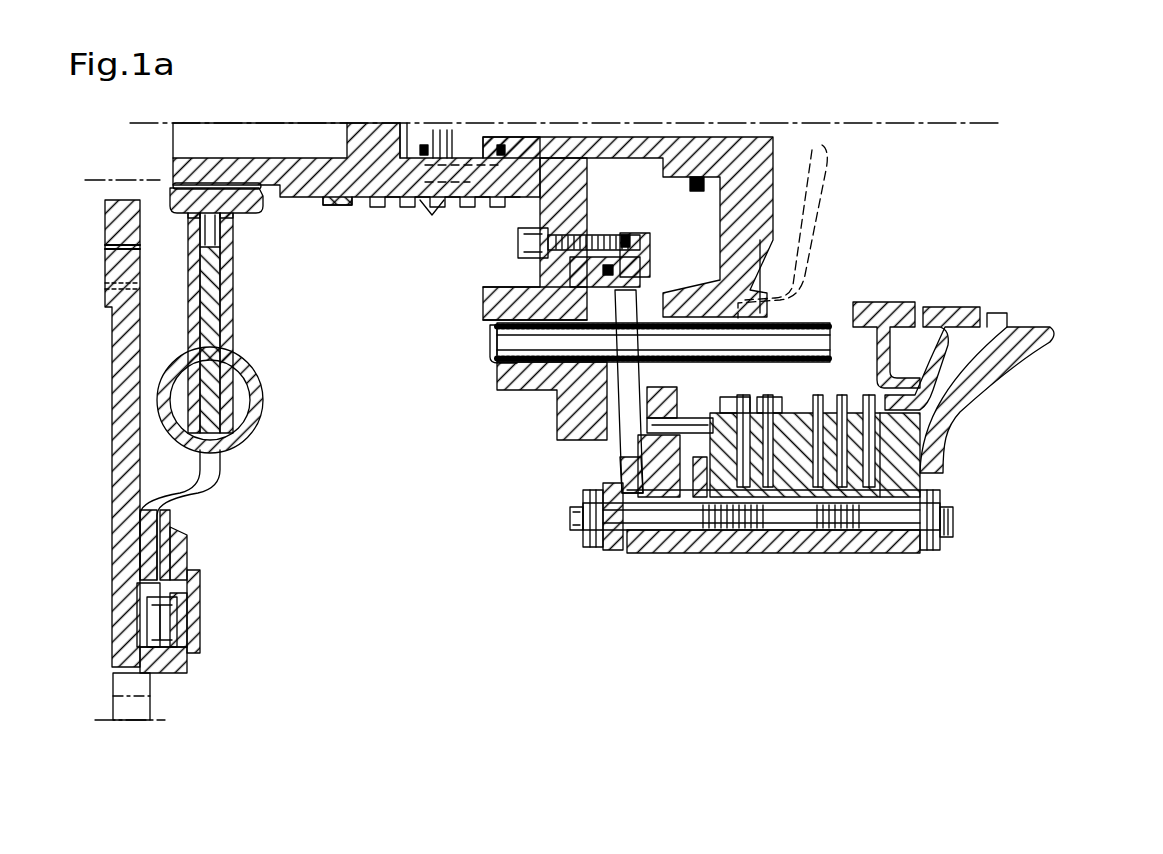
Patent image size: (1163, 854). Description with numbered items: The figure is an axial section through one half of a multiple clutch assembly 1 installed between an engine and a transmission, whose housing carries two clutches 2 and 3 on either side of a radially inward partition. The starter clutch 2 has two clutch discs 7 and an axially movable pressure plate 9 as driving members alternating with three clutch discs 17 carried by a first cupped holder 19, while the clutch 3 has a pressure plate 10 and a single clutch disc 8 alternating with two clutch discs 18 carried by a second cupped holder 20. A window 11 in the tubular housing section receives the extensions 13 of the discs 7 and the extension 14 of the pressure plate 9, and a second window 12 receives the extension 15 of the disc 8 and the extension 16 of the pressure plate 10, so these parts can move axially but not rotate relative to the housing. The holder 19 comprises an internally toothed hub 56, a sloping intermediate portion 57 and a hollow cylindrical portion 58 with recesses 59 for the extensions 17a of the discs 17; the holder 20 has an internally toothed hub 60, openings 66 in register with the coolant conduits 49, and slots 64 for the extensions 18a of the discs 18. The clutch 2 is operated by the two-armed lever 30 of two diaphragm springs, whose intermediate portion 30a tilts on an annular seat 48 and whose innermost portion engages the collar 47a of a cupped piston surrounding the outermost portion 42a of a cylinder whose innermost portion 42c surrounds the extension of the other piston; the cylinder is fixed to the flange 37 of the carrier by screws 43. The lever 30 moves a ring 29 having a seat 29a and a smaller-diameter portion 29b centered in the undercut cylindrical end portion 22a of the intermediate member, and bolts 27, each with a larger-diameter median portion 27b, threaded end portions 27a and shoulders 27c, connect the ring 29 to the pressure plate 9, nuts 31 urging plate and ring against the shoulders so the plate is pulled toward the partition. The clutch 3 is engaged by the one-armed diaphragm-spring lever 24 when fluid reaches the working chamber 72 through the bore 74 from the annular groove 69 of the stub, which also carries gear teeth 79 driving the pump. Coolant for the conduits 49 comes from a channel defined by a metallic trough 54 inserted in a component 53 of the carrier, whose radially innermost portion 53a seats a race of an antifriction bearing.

The multiple clutch assembly 1 is at (468, 570).
The clutch 2 is at (898, 600).
The clutch 3 is at (803, 630).
The clutch discs 7 is at (865, 443).
The clutch disc 8 is at (770, 398).
The pressure plate 9 is at (897, 479).
The pressure plate 10 is at (707, 400).
The window 11 is at (862, 545).
The second window 12 is at (735, 420).
The extensions 13 is at (820, 490).
The extension 14 is at (927, 552).
The extension 15 is at (745, 500).
The extension 16 is at (713, 503).
The clutch discs 17 is at (895, 230).
The extensions 17a is at (840, 400).
The clutch discs 18 is at (822, 506).
The extensions 18a is at (778, 480).
The first cupped holder 19 is at (1016, 314).
The second cupped holder 20 is at (1003, 246).
The undercut cylindrical end portion 22a is at (602, 548).
The lever 24 is at (670, 480).
The bolts 27 is at (761, 550).
The smaller-diameter end portions 27a is at (578, 505).
The larger-diameter median portion 27b is at (645, 528).
The shoulder 27c is at (612, 540).
The force transmitting element 29 is at (617, 530).
The seat 29a is at (588, 532).
The smaller-diameter portion 29b is at (635, 641).
The lever 30 is at (660, 332).
The intermediate portion 30a is at (623, 447).
The nuts 31 is at (590, 503).
The flange 37 is at (574, 237).
The hollow cylindrical radially outermost portion 42a is at (712, 158).
The hollow cylindrical radially innermost portion 42c is at (725, 235).
The screws 43 is at (547, 232).
The collar 47a is at (620, 232).
The annular seat 48 is at (598, 525).
The conduits 49 is at (737, 340).
The component 53 is at (513, 370).
The radially innermost portion 53a is at (503, 283).
The trough 54 is at (487, 347).
The hub 56 is at (977, 310).
The intermediate portion 57 is at (930, 353).
The hollow cylindrical portion 58 is at (902, 302).
The recesses 59 is at (838, 393).
The hub 60 is at (917, 303).
The slots 64 is at (768, 335).
The openings 66 is at (883, 373).
The annular groove 69 is at (432, 215).
The working chamber 72 is at (600, 227).
The bore 74 is at (418, 147).
The gear teeth 79 is at (333, 197).